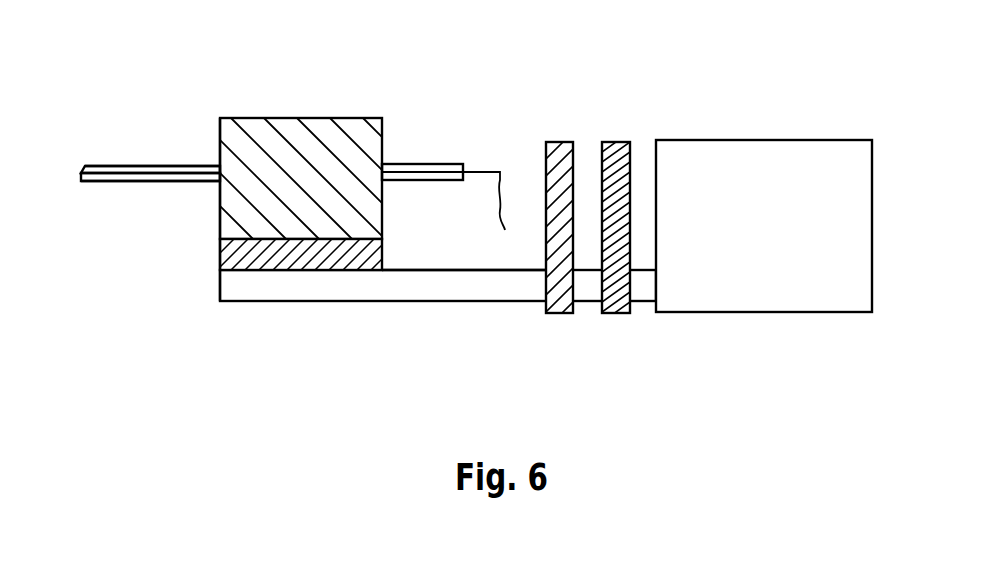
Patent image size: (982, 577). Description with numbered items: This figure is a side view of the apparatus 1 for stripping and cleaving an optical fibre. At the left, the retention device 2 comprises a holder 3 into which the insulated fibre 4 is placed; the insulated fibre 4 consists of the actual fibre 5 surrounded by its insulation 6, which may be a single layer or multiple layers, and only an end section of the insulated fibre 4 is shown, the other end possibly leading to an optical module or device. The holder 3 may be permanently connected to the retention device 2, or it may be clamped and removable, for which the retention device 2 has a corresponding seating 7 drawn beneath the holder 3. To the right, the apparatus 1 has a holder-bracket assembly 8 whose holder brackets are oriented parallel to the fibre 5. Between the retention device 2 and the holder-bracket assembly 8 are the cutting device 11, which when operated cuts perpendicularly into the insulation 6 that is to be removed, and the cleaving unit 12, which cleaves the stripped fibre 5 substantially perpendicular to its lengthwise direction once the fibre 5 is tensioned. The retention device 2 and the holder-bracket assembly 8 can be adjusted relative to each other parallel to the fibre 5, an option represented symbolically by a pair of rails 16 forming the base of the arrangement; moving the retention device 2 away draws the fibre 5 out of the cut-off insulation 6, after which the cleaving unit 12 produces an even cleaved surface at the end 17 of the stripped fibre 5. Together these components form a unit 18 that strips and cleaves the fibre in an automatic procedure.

The apparatus 1 is at (320, 360).
The retention device 2 is at (287, 117).
The holder 3 is at (223, 164).
The insulated fibre 4 is at (182, 187).
The fibre 5 is at (132, 167).
The insulation 6 is at (96, 183).
The seating 7 is at (357, 239).
The holder-bracket assembly 8 is at (808, 161).
The cutting device 11 is at (621, 137).
The cleaving unit 12 is at (561, 138).
The pair of rails 16 is at (432, 282).
The end of stripped fibre 17 is at (491, 217).
The unit 18 is at (490, 318).